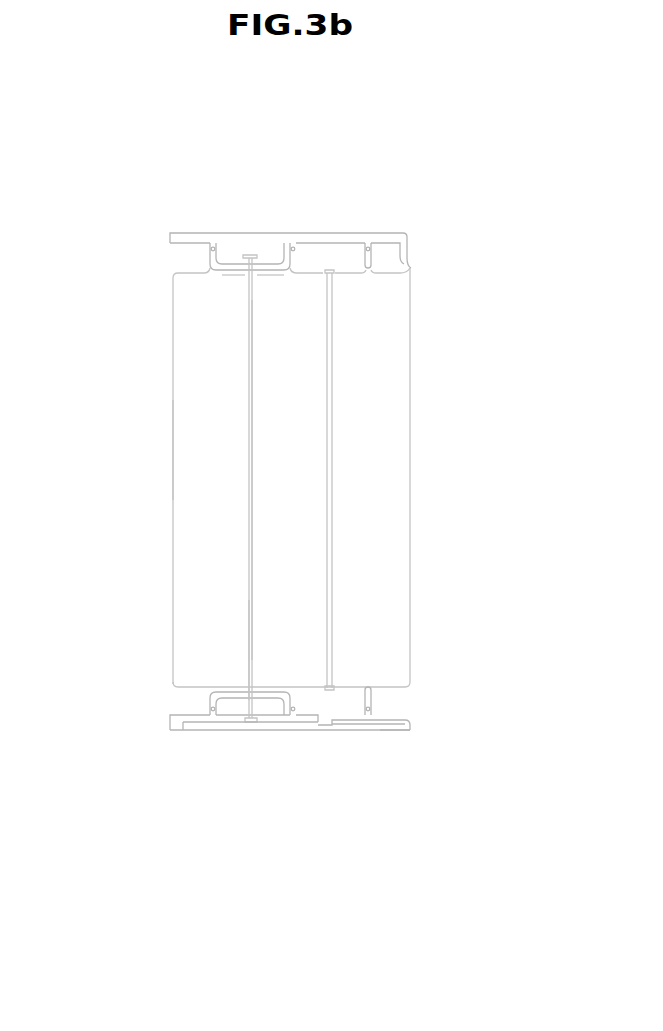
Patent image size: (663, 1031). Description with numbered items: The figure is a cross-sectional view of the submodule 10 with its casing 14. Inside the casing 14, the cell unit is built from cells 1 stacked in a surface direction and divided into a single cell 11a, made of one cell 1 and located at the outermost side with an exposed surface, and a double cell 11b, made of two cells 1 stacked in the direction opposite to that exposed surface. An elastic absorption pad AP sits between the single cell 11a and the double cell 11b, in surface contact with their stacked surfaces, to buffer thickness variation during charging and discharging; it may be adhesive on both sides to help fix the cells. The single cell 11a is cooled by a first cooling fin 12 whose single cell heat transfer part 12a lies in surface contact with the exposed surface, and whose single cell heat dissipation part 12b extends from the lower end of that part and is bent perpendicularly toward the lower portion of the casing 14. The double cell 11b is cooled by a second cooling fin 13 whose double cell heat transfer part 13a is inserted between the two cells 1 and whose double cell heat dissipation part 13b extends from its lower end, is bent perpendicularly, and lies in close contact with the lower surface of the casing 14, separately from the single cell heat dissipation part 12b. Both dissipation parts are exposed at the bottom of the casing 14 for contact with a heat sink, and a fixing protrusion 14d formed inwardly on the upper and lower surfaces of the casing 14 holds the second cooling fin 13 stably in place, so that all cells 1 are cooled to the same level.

The submodule 10 is at (64, 147).
The cell 1 is at (262, 410).
The single cell 11a is at (390, 408).
The double cell 11b is at (120, 412).
The first cooling fin 12 is at (506, 676).
The single cell heat transfer part 12a is at (409, 681).
The single cell heat dissipation part 12b is at (382, 727).
The second cooling fin 13 is at (322, 832).
The double cell heat transfer part 13a is at (250, 673).
The double cell heat dissipation part 13b is at (250, 725).
The casing 14 is at (187, 240).
The fixing protrusion 14d is at (272, 262).
The elastic absorption pad AP is at (328, 272).